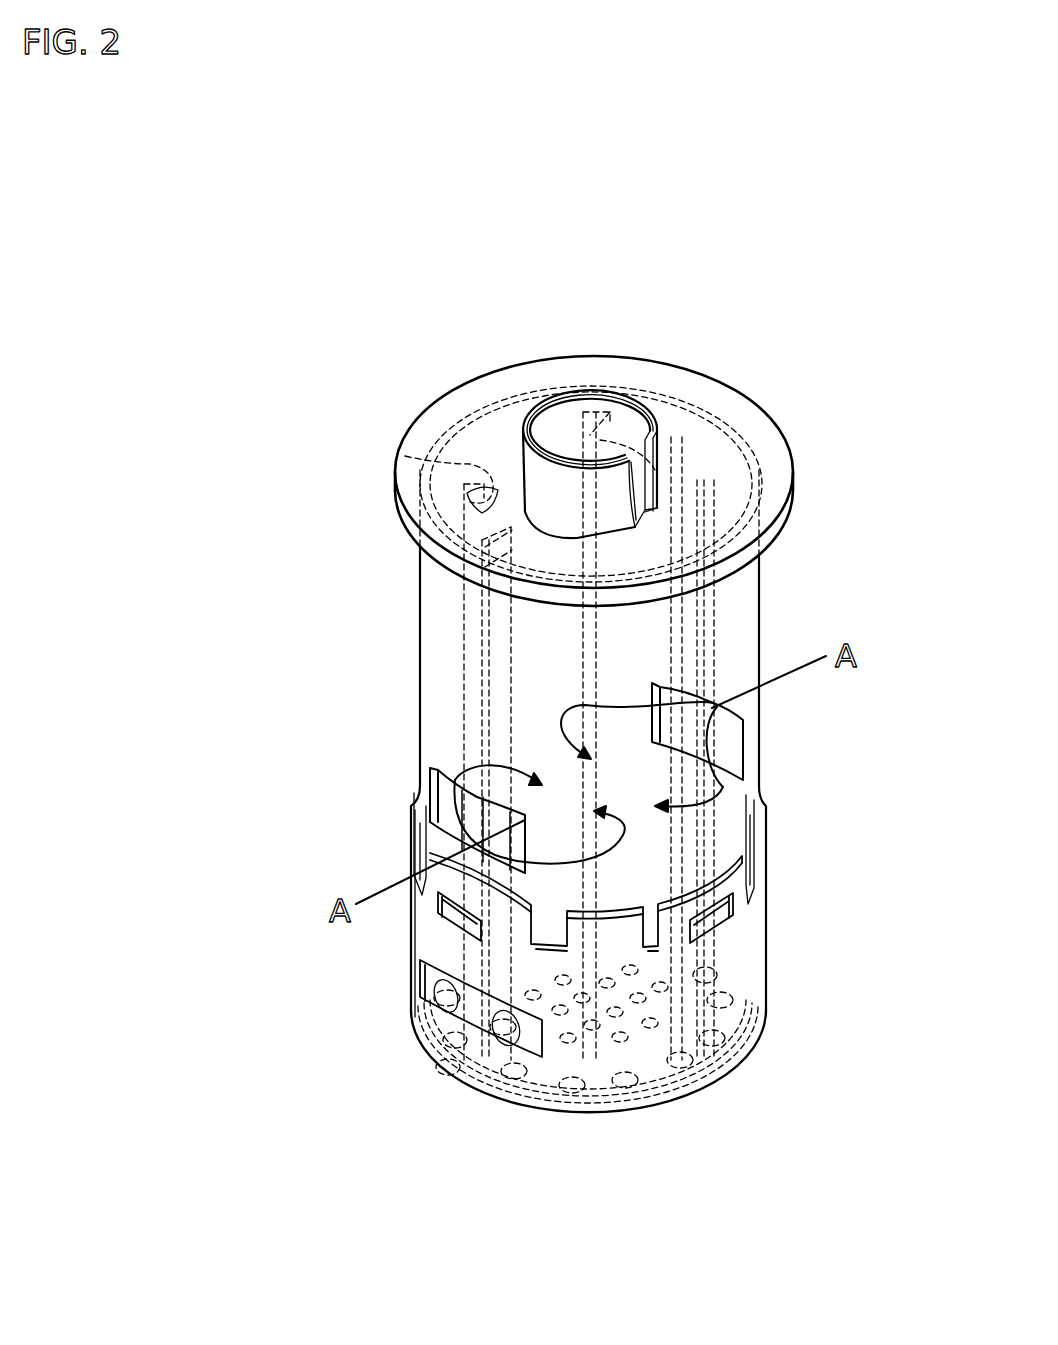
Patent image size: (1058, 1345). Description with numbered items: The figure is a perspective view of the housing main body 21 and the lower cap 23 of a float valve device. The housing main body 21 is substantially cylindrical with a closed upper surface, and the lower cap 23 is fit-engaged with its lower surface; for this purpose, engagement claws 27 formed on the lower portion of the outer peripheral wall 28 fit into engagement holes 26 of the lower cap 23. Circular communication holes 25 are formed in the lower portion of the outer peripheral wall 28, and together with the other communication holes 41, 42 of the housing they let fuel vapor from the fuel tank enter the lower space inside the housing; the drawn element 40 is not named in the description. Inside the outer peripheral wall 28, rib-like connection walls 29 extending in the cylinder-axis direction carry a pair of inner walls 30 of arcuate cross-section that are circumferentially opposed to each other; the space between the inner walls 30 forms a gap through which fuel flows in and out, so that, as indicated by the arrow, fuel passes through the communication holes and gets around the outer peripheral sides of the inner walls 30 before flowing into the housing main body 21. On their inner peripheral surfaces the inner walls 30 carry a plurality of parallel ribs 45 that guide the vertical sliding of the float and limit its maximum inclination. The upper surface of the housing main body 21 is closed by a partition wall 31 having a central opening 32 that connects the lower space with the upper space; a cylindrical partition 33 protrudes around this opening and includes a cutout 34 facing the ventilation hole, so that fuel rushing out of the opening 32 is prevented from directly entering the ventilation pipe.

The housing main body 21 is at (405, 694).
The lower cap 23 is at (473, 1088).
The circular communication holes 25 is at (440, 997).
The engagement holes 26 is at (443, 925).
The engagement claws 27 is at (442, 905).
The outer peripheral wall 28 is at (419, 591).
The rib-like connection walls 29 is at (500, 638).
The inner walls 30 is at (493, 468).
The partition wall 31 is at (664, 442).
The opening 32 is at (638, 488).
The cylindrical partition 33 is at (532, 393).
The cutout 34 is at (638, 452).
The hole 40 is at (462, 1032).
The communication holes 41 is at (575, 1092).
The communication holes 42 is at (645, 1025).
The ribs 45 is at (478, 472).